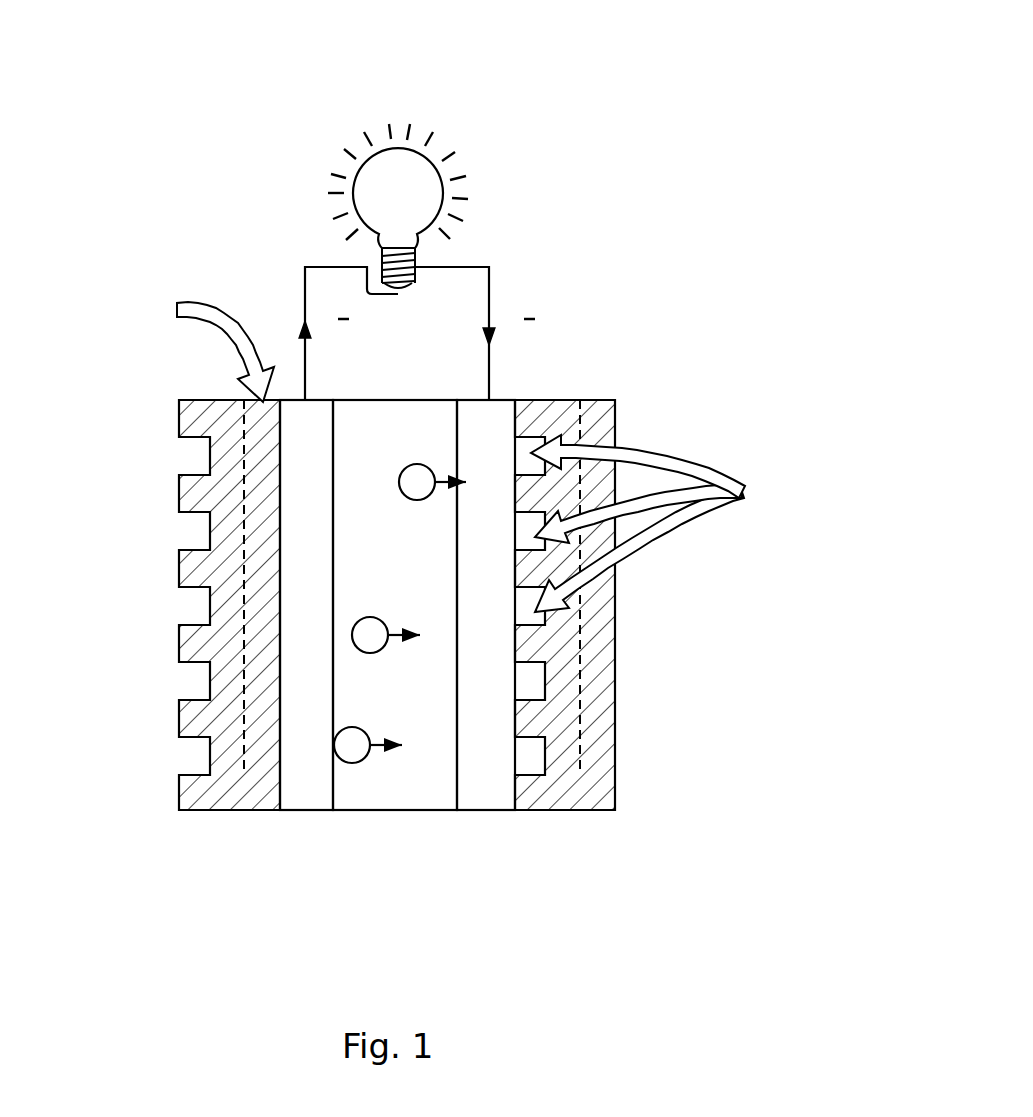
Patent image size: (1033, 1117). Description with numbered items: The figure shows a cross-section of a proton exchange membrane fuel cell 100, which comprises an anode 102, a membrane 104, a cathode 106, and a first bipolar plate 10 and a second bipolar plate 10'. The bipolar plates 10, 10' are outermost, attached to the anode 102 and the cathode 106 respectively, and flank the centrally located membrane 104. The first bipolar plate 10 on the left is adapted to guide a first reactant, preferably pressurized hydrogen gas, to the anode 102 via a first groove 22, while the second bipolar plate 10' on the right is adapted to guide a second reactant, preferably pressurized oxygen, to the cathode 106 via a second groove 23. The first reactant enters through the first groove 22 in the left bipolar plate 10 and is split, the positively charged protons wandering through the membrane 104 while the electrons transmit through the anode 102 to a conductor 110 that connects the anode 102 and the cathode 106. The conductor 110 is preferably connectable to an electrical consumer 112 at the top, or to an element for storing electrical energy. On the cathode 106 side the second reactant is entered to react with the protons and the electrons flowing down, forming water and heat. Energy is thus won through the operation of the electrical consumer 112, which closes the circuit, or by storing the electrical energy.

The proton exchange membrane fuel cell 100 is at (430, 496).
The first bipolar plate 10 is at (191, 671).
The second bipolar plate 10' is at (641, 624).
The first groove 22 is at (241, 552).
The second groove 23 is at (535, 437).
The anode 102 is at (301, 812).
The membrane 104 is at (405, 812).
The cathode 106 is at (485, 812).
The conductor 110 is at (300, 290).
The consumer 112 is at (448, 188).